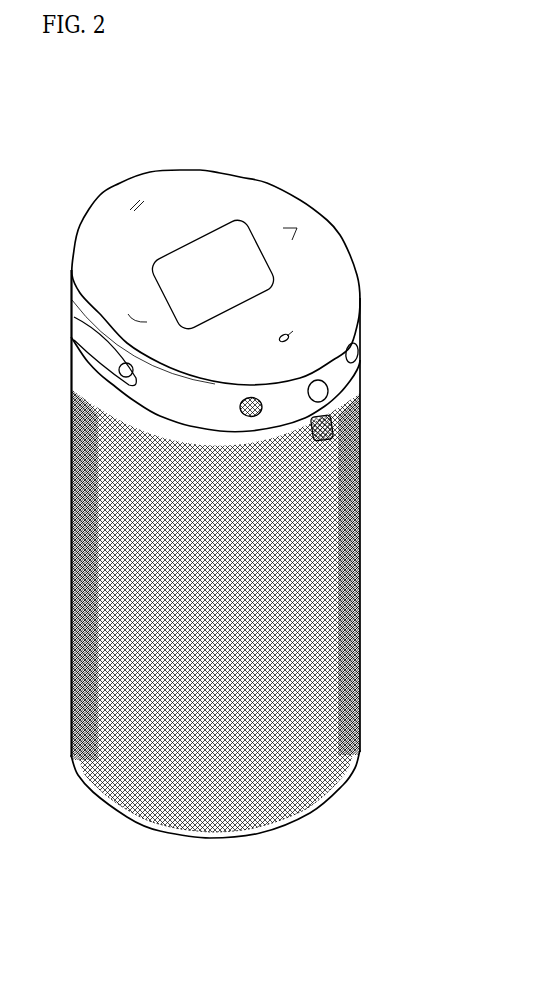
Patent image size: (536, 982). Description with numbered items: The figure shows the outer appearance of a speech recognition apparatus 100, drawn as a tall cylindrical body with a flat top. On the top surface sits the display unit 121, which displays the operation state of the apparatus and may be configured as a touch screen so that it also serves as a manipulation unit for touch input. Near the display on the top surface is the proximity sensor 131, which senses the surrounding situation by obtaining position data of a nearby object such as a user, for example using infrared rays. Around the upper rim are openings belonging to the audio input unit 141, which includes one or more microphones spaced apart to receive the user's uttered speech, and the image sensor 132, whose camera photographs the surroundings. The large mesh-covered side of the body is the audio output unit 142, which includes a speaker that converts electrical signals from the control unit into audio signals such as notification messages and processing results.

The speech recognition apparatus 100 is at (259, 465).
The display unit 121 is at (247, 237).
The proximity sensor 131 is at (287, 337).
The audio input unit 141 is at (262, 402).
The image sensor 132 is at (362, 420).
The audio output unit 142 is at (362, 568).